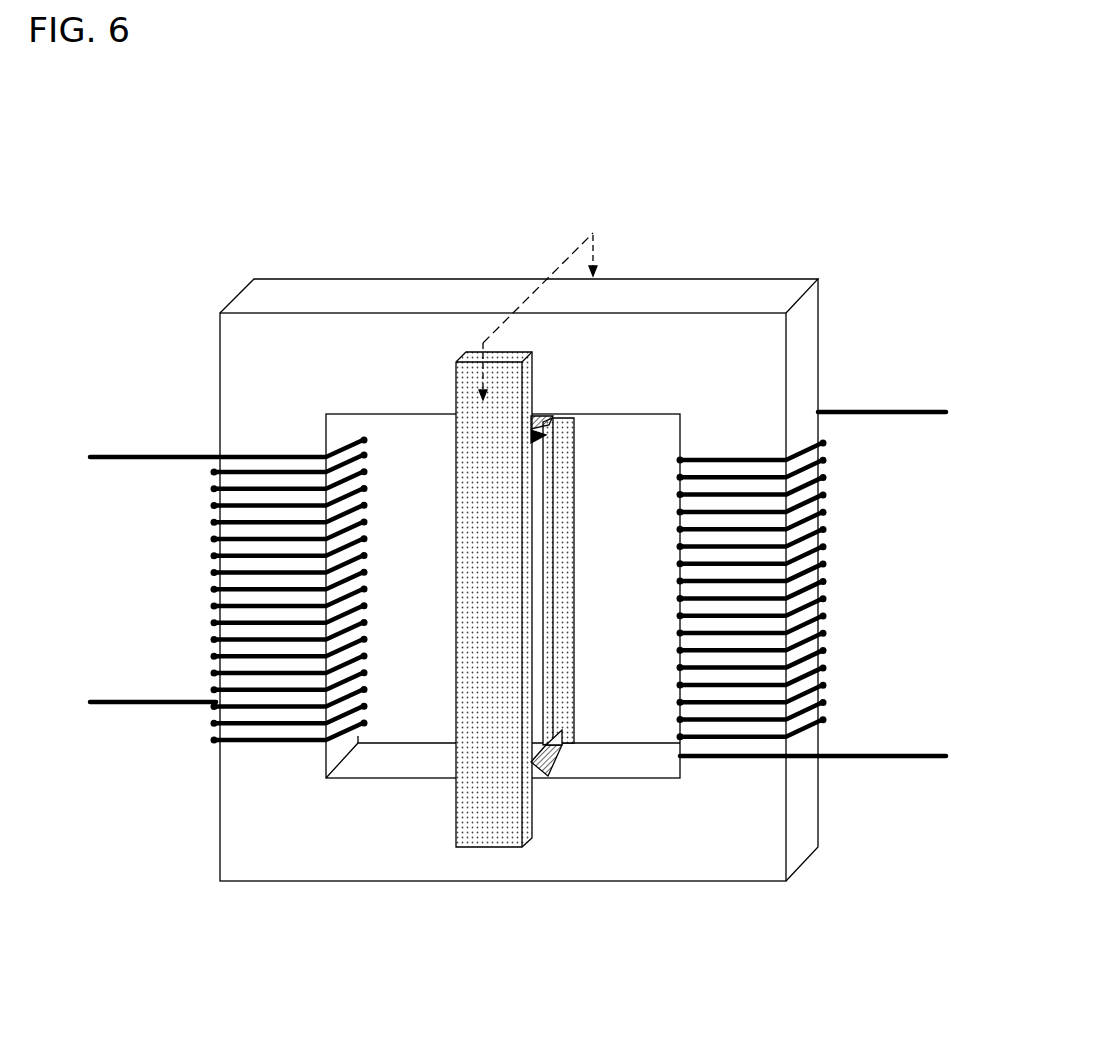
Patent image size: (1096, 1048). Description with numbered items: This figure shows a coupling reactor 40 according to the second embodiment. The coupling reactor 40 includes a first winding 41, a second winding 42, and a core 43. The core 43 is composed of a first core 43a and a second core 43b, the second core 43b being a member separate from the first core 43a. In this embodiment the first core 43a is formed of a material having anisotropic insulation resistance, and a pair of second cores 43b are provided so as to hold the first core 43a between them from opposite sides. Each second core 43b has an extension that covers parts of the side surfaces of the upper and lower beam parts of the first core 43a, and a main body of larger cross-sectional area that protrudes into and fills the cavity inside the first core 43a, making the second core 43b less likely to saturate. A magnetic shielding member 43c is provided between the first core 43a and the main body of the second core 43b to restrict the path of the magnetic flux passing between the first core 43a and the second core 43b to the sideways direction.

The coupling reactor 40 is at (216, 231).
The first winding 41 is at (196, 465).
The second winding 42 is at (837, 470).
The core 43 is at (518, 614).
The first core 43a is at (341, 293).
The second core 43b is at (457, 570).
The magnetic shielding member 43c is at (541, 412).